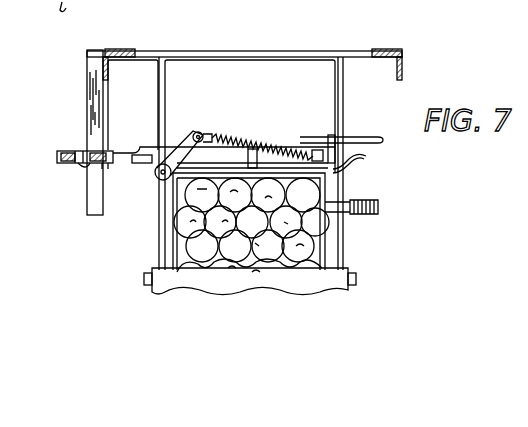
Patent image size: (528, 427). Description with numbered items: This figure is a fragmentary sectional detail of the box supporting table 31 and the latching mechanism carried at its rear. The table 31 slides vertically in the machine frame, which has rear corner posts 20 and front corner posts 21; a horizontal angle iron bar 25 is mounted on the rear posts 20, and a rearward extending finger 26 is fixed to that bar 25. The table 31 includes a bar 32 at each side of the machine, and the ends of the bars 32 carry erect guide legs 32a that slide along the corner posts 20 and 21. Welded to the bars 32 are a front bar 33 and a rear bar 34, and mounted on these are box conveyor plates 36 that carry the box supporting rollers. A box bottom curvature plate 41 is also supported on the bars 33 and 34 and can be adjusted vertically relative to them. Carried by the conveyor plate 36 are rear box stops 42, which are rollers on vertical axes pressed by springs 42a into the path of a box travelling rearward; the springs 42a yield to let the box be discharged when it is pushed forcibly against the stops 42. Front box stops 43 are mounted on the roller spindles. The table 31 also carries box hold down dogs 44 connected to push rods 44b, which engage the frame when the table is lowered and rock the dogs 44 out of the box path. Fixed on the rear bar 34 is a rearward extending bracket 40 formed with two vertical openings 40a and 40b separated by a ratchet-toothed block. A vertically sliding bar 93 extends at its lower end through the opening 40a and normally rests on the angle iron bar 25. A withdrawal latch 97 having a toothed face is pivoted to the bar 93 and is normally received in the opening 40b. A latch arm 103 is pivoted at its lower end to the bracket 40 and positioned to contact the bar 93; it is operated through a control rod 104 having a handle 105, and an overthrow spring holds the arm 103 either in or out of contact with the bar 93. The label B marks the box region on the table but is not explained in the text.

The rear corner posts 20 is at (404, 62).
The front corner posts 21 is at (106, 58).
The horizontal angle iron bar 25 is at (92, 91).
The rearward extending finger 26 is at (80, 166).
The box supporting table 31 is at (318, 45).
The bar 32 is at (257, 51).
The erect guide legs 32a is at (122, 49).
The front bar 33 is at (338, 90).
The rear bar 34 is at (165, 90).
The box conveyor plates 36 is at (364, 162).
The rearward extending bracket 40 is at (57, 156).
The vertical opening 40a is at (133, 105).
The vertical opening 40b is at (78, 151).
The box bottom curvature plate 41 is at (183, 292).
The rear box stops 42 is at (158, 180).
The springs 42a is at (238, 136).
The front box stops 43 is at (379, 206).
The box hold down dogs 44 is at (283, 155).
The push rods 44b is at (258, 152).
The bar 93 is at (108, 164).
The withdrawal latch 97 is at (70, 163).
The latch arm 103 is at (140, 165).
The control rod 104 is at (185, 140).
The handle 105 is at (374, 137).
The egg basket B is at (327, 248).